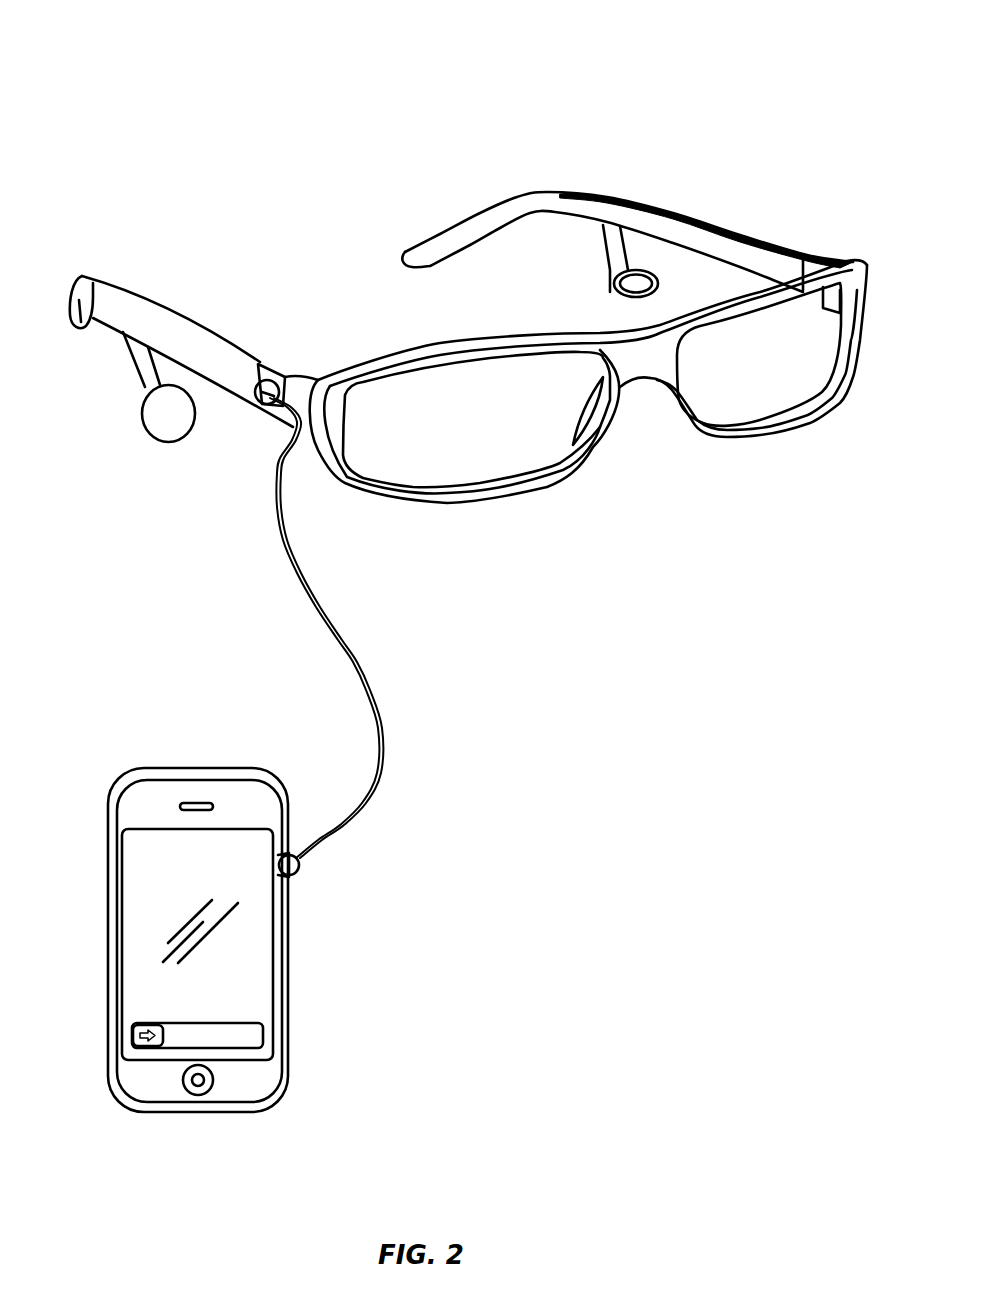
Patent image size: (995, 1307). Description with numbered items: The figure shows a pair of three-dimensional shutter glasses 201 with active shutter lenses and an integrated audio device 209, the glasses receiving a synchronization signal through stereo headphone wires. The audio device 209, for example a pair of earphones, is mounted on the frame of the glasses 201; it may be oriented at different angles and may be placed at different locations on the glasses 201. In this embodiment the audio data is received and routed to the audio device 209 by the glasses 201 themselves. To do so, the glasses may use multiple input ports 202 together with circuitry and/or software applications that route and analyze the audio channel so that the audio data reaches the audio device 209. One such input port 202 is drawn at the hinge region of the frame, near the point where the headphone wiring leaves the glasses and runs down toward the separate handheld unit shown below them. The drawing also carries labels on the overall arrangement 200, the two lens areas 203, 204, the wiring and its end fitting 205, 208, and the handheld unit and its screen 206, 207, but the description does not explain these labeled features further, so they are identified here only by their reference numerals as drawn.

The wearable computing system 200 is at (226, 70).
The 3D glasses 201 is at (598, 446).
The input ports 202 is at (258, 380).
The left lens 203 is at (476, 420).
The right lens 204 is at (759, 354).
The cable 205 is at (364, 786).
The mobile device 206 is at (107, 865).
The display screen 207 is at (197, 944).
The connector plug 208 is at (300, 866).
The audio device 209 is at (162, 387).